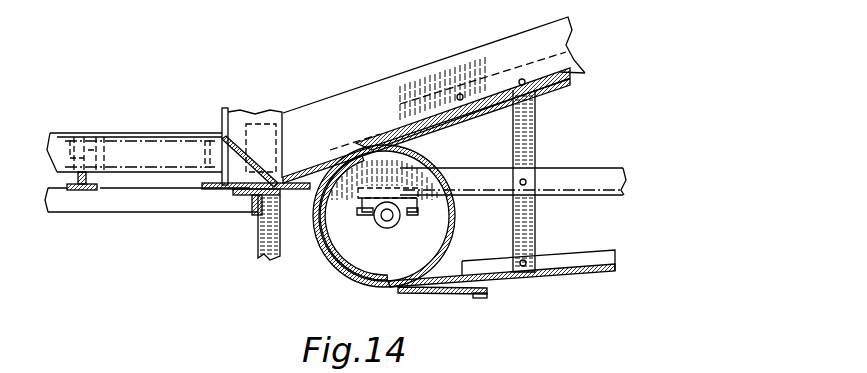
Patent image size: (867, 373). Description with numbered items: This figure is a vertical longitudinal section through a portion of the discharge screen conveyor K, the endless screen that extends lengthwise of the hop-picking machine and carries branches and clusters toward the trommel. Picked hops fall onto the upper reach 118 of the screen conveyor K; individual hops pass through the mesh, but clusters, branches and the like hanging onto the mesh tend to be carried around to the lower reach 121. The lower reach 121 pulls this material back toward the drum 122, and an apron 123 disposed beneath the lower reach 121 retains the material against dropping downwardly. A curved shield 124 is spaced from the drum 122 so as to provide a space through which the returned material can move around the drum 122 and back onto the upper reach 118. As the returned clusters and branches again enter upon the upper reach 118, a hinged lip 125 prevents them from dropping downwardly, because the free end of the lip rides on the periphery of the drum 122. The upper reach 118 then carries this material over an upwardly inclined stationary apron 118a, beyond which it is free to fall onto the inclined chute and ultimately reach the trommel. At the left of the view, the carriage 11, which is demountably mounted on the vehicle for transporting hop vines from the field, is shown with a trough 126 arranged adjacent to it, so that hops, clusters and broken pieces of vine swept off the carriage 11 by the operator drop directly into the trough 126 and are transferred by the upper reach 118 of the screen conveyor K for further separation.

The carriage 11 is at (156, 133).
The upper reach 118 is at (383, 136).
The stationary apron 118a is at (567, 80).
The lower reach 121 is at (608, 262).
The drum 122 is at (352, 284).
The apron 123 is at (519, 281).
The curved shield 124 is at (323, 263).
The hinged lip 125 is at (372, 147).
The trough 126 is at (233, 141).
The discharge screen conveyor K is at (577, 260).